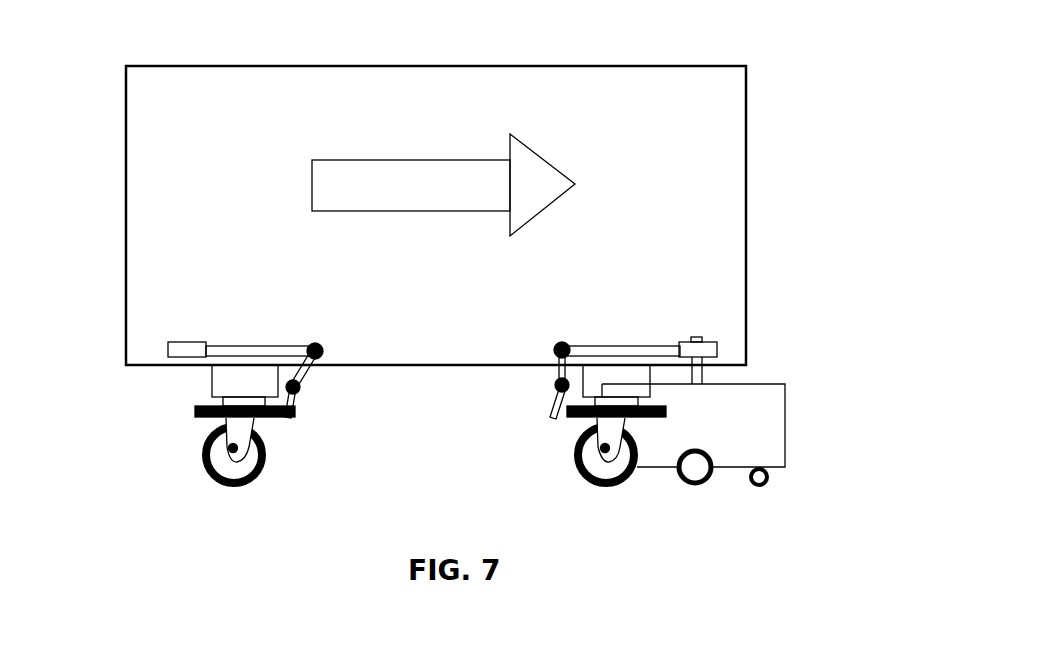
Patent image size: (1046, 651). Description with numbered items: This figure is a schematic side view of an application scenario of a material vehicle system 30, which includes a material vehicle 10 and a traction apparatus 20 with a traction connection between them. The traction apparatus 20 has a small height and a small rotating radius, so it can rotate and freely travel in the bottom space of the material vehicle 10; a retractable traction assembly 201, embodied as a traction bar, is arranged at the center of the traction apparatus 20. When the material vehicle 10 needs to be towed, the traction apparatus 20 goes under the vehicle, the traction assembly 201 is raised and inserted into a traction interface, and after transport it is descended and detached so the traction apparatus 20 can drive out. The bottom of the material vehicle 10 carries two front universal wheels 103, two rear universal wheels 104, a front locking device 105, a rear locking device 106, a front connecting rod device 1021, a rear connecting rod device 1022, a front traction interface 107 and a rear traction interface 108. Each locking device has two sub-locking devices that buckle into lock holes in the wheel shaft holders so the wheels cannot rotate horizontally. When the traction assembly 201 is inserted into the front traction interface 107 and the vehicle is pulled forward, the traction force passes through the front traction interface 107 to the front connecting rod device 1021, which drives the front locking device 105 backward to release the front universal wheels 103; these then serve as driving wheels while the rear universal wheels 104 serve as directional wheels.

The material vehicle system 30 is at (764, 36).
The material vehicle 10 is at (755, 137).
The front connecting rod device 1021 is at (244, 339).
The rear connecting rod device 1022 is at (616, 338).
The front traction interface 107 is at (158, 347).
The rear traction interface 108 is at (728, 348).
The front universal wheel 103 is at (193, 458).
The rear universal wheel 104 is at (564, 465).
The front locking device 105 is at (308, 402).
The rear locking device 106 is at (542, 407).
The traction assembly 201 is at (716, 373).
The traction apparatus 20 is at (796, 425).